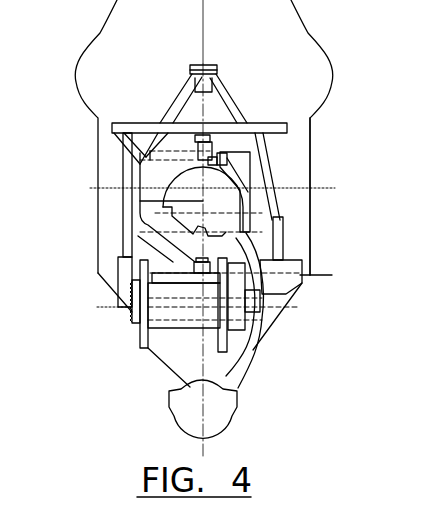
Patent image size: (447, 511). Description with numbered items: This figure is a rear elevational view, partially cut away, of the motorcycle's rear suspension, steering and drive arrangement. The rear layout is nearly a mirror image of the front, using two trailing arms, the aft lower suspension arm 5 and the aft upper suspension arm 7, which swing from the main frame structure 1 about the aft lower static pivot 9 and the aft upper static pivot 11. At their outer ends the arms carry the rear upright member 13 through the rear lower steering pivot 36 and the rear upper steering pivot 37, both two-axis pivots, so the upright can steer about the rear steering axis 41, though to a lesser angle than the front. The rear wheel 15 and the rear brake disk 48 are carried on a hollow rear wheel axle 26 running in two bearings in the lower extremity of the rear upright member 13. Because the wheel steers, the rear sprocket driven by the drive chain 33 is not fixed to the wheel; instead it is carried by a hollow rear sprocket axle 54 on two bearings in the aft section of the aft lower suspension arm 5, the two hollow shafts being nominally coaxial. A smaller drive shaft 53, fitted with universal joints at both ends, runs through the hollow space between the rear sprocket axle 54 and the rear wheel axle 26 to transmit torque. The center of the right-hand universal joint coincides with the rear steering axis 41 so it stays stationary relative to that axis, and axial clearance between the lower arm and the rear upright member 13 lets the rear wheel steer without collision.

The main frame structure 1 is at (162, 355).
The aft lower suspension arm 5 is at (307, 285).
The aft upper suspension arm 7 is at (273, 173).
The aft lower static pivot 9 is at (322, 275).
The aft upper static pivot 11 is at (320, 190).
The rear upright member 13 is at (133, 159).
The rear wheel 15 is at (250, 362).
The rear wheel axle 26 is at (263, 308).
The drive chain 33 is at (135, 343).
The rear lower steering pivot 36 is at (125, 247).
The rear upper steering pivot 37 is at (203, 160).
The rear steering axis 41 is at (140, 201).
The rear brake disk 48 is at (283, 238).
The drive shaft 53 is at (180, 343).
The rear sprocket axle 54 is at (127, 315).